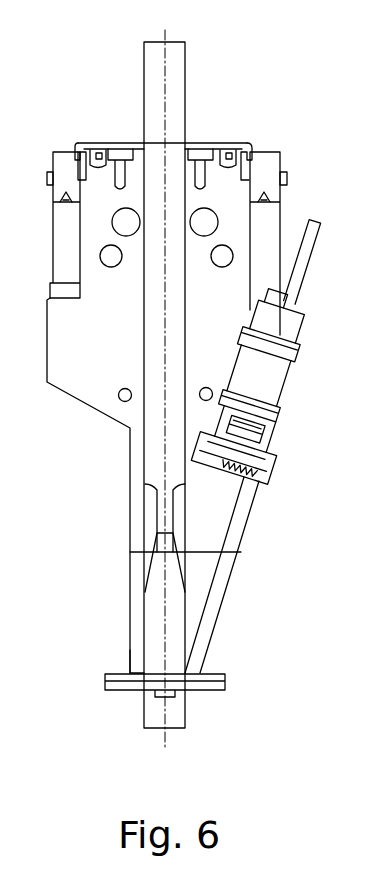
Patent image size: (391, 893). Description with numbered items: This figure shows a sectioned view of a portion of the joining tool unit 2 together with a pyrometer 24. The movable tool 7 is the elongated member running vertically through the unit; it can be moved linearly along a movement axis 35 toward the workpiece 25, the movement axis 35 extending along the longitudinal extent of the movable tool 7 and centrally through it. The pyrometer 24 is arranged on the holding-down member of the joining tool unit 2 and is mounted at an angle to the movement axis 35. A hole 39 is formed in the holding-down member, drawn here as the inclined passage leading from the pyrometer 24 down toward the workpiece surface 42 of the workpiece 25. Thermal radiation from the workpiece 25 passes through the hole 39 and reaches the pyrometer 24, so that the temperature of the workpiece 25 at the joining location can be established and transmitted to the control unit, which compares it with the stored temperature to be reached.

The joining tool unit 2 is at (298, 169).
The movable tool 7 is at (187, 91).
The movement axis 35 is at (165, 110).
The pyrometer 24 is at (281, 386).
The hole 39 is at (217, 508).
The workpiece 25 is at (226, 673).
The workpiece surface 42 is at (115, 672).